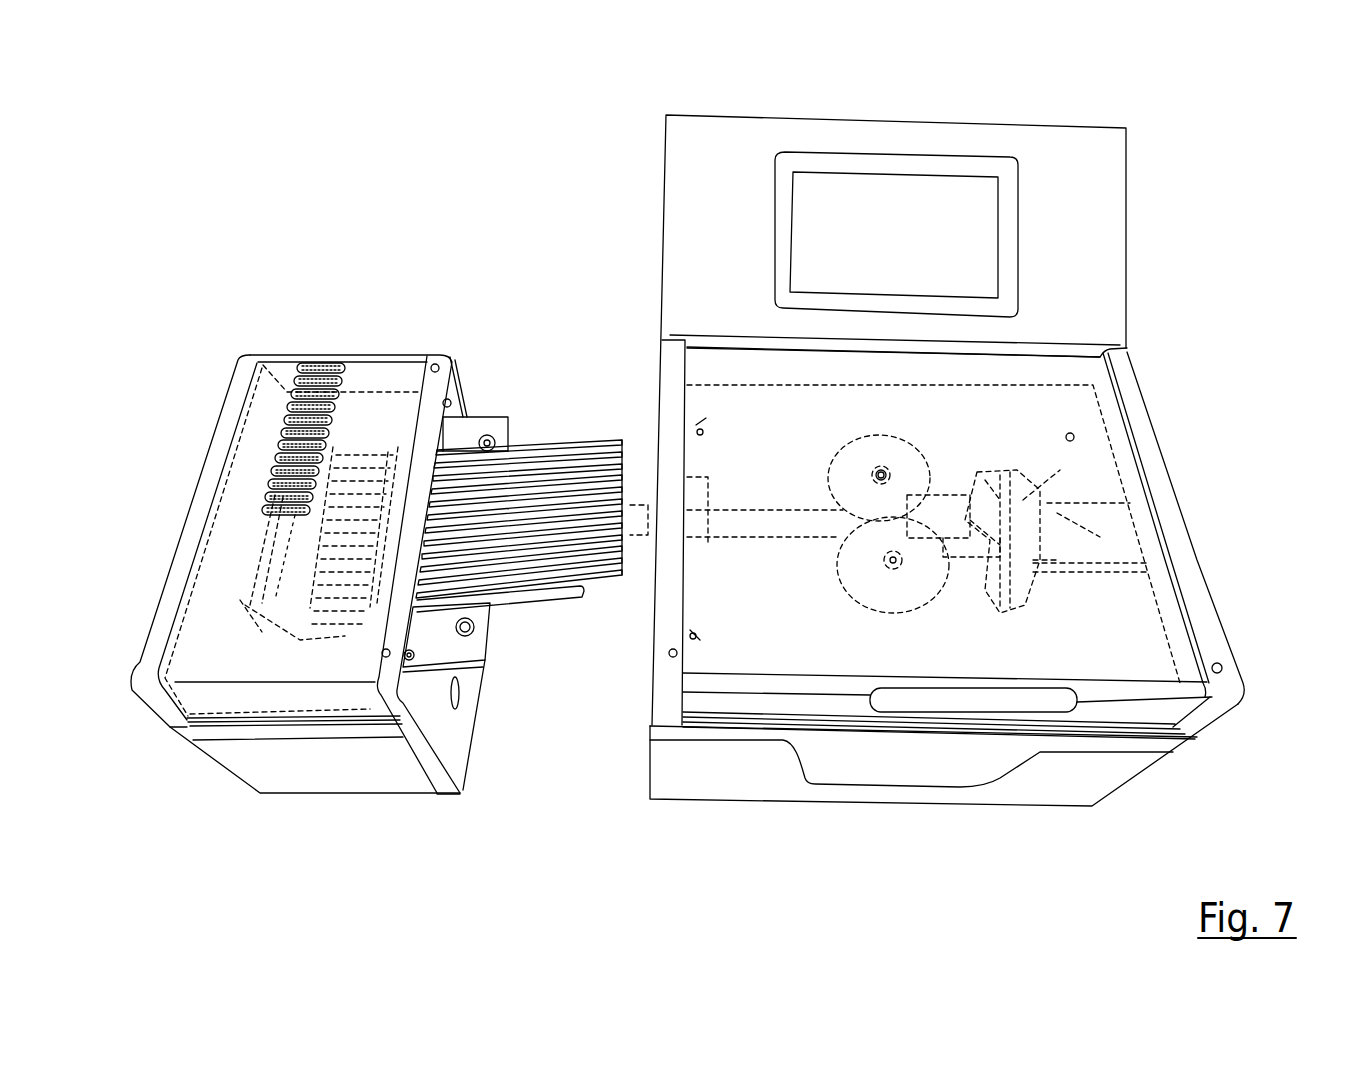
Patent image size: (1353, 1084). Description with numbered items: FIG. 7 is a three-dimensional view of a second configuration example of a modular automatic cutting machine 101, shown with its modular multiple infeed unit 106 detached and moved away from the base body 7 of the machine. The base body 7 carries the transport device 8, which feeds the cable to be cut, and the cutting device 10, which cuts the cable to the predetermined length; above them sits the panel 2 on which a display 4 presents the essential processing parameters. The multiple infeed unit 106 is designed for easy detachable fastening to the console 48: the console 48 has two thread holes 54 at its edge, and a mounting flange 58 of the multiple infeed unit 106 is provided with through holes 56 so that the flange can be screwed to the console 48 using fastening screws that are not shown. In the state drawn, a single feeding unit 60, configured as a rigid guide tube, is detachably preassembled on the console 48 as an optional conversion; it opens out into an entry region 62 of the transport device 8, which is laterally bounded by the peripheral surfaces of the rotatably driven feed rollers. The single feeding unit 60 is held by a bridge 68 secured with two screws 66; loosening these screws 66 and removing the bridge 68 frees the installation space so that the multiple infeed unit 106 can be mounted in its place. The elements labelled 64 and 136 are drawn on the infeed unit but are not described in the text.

The panel 2 is at (1083, 152).
The display 4 is at (833, 162).
The base body 7 is at (1157, 347).
The transport device 8 is at (910, 618).
The cutting device 10 is at (1017, 600).
The console 48 is at (672, 645).
The thread holes 54 is at (693, 633).
The through holes 56 is at (510, 420).
The mounting flange 58 is at (475, 420).
The single feeding unit 60 is at (792, 525).
The entry region 62 is at (880, 477).
The sample tube stack 64 is at (327, 343).
The screws 66 is at (700, 530).
The bridge 68 is at (700, 548).
The modular automatic cutting machine 101 is at (357, 223).
The modular multiple infeed unit 106 is at (233, 312).
The cover plate 136 is at (387, 377).